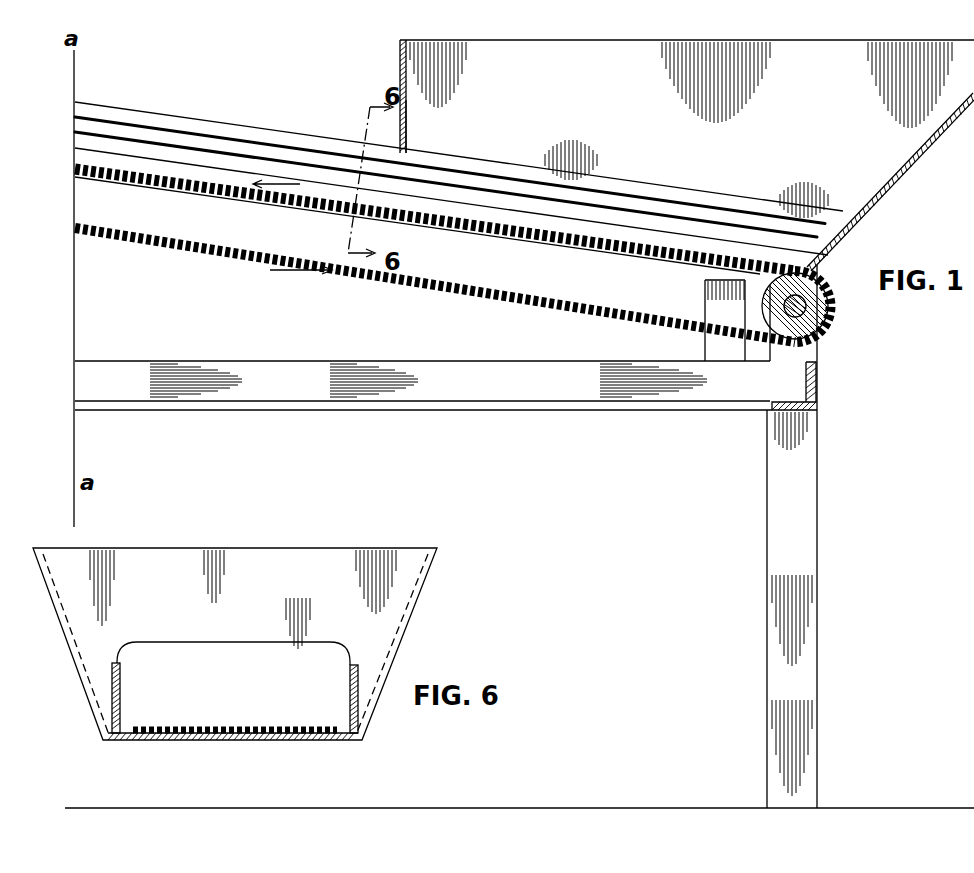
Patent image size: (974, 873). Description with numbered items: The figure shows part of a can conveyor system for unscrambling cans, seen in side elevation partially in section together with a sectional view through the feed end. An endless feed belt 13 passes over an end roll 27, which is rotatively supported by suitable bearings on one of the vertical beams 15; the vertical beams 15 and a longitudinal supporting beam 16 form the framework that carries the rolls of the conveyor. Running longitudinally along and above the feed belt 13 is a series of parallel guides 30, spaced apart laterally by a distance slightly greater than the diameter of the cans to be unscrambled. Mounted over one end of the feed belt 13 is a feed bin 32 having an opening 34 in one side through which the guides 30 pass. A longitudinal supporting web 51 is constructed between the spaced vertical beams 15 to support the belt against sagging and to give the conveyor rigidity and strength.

In FIG. 1, the feed belt 13 is at (268, 262).
In FIG. 6, the feed belt 13 is at (268, 727).
In FIG. 1, the vertical beam 15 is at (772, 480).
In FIG. 1, the longitudinal supporting beam 16 is at (575, 397).
In FIG. 1, the end roll 27 is at (745, 306).
In FIG. 1, the guide 30 is at (238, 150).
In FIG. 6, the guide 30 is at (121, 690).
In FIG. 1, the feed bin 32 is at (404, 54).
In FIG. 6, the feed bin 32 is at (412, 585).
In FIG. 1, the opening 34 is at (405, 143).
In FIG. 6, the opening 34 is at (250, 642).
In FIG. 1, the longitudinal supporting web 51 is at (235, 198).
In FIG. 6, the longitudinal supporting web 51 is at (252, 742).